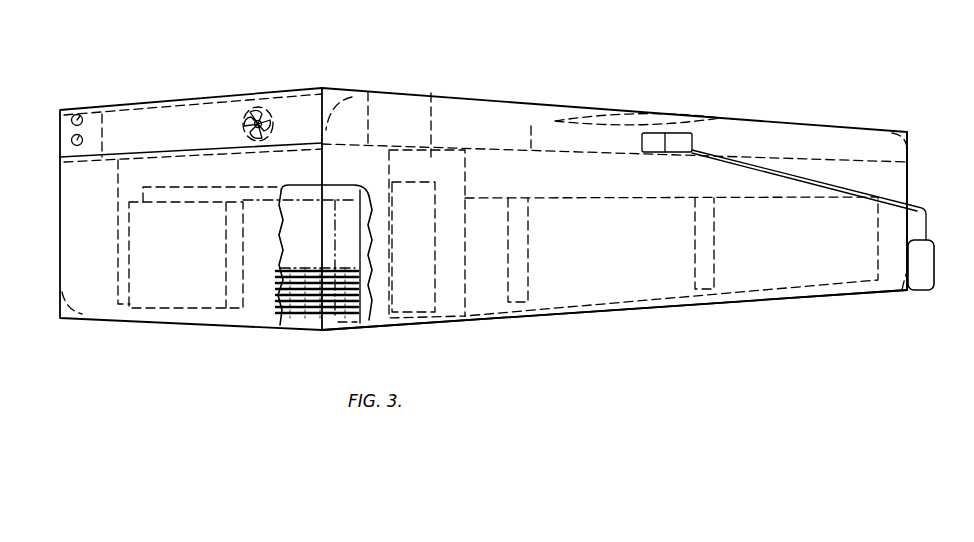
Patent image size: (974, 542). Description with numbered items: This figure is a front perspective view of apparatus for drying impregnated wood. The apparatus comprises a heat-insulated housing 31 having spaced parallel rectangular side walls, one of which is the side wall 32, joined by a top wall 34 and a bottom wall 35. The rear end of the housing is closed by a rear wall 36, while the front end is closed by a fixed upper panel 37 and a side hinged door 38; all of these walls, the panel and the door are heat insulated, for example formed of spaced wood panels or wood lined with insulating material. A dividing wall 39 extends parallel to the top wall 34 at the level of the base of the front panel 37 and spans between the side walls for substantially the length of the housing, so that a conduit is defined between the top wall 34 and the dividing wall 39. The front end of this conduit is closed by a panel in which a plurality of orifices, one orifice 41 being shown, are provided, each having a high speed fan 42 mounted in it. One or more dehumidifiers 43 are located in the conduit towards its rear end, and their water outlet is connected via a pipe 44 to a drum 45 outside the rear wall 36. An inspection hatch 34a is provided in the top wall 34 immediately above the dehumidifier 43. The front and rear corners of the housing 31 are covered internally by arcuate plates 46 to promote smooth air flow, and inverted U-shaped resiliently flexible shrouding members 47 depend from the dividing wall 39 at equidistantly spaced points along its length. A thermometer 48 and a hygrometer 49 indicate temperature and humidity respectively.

The housing 31 is at (60, 240).
The side wall 32 is at (650, 277).
The top wall 34 is at (463, 98).
The inspection hatch 34a is at (640, 118).
The bottom wall 35 is at (521, 322).
The rear wall 36 is at (907, 178).
The fixed upper panel 37 is at (141, 121).
The side hinged door 38 is at (77, 200).
The dividing wall 39 is at (531, 127).
The orifice 41 is at (252, 108).
The high speed fan 42 is at (245, 122).
The dehumidifier 43 is at (686, 142).
The pipe 44 is at (948, 203).
The drum 45 is at (924, 261).
The arcuate plate 46 is at (337, 98).
The shrouding member 47 is at (373, 155).
The thermometer 48 is at (77, 114).
The hygrometer 49 is at (71, 140).